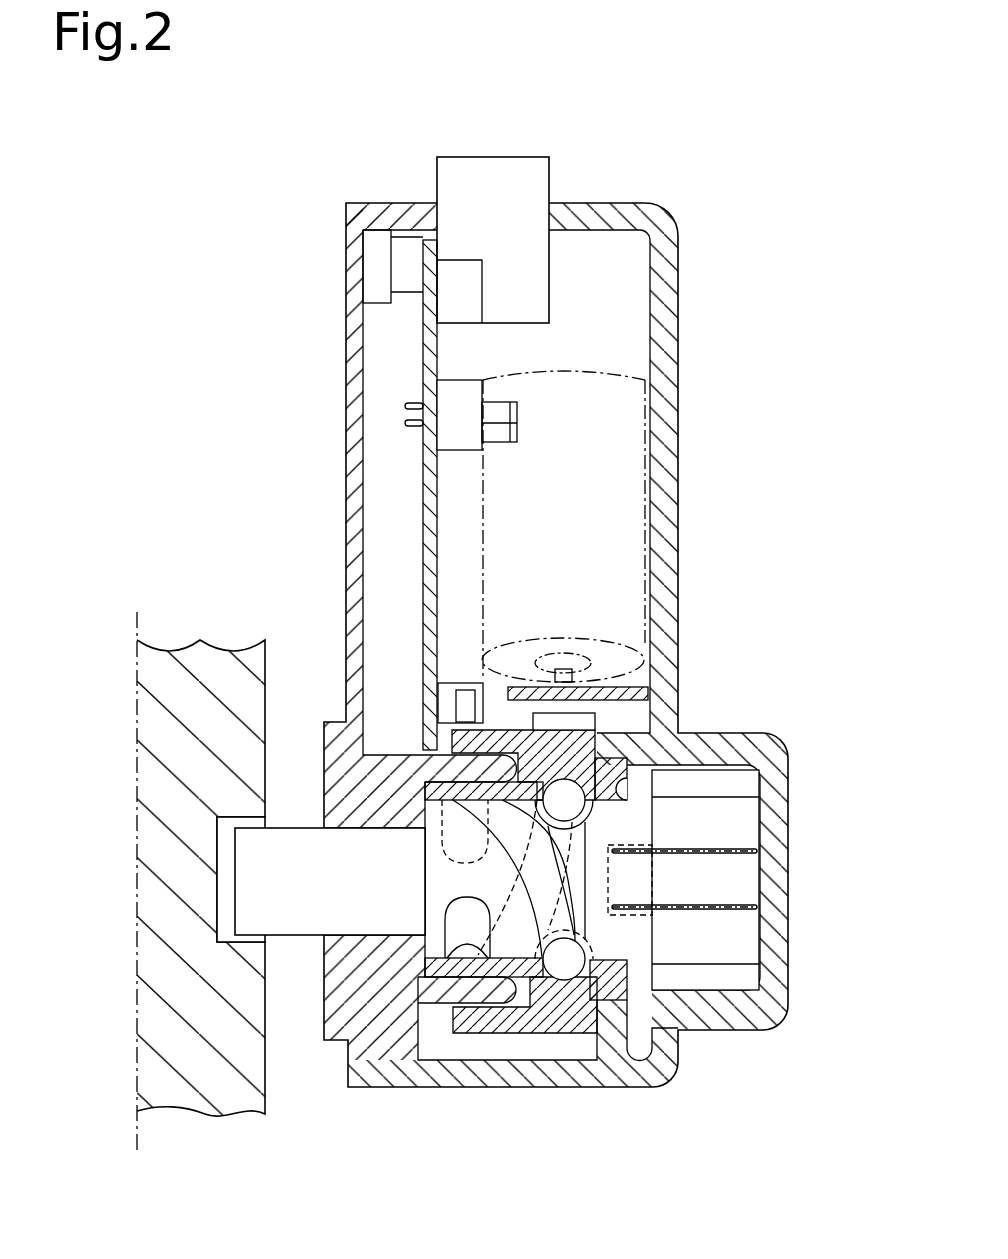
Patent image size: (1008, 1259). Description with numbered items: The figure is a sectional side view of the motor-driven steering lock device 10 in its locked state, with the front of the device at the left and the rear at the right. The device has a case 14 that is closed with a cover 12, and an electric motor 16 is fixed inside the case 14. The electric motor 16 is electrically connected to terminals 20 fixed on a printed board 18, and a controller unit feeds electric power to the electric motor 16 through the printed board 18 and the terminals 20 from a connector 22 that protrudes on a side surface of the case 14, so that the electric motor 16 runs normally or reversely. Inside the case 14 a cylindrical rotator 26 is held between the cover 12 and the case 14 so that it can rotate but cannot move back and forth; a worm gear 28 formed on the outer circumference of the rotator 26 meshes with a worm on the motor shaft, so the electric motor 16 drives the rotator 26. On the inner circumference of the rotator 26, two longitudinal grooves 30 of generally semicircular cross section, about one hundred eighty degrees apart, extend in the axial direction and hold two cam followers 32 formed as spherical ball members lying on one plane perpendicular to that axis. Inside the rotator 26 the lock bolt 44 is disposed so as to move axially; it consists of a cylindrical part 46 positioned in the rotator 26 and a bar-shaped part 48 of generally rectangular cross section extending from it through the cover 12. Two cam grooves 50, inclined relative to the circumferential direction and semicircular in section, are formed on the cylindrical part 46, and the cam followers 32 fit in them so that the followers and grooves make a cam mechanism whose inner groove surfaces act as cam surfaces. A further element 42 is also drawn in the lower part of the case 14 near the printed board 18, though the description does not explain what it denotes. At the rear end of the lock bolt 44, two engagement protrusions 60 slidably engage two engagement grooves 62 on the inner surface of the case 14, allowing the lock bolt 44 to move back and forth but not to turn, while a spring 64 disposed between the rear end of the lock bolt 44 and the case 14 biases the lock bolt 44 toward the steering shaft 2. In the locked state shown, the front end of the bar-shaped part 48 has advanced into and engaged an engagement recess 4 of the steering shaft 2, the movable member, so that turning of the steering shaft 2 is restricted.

The steering shaft 2 is at (168, 972).
The engagement recess 4 is at (232, 938).
The motor-driven steering lock device 10 is at (692, 207).
The cover 12 is at (357, 512).
The case 14 is at (668, 348).
The electric motor 16 is at (561, 374).
The printed board 18 is at (437, 324).
The terminals 20 is at (452, 396).
The connector 22 is at (528, 178).
The rotator 26 is at (588, 736).
The worm gear 28 is at (573, 1040).
The longitudinal grooves 30 is at (615, 785).
The cam followers 32 is at (563, 965).
The drive pin 42 is at (458, 690).
The lock bolt 44 is at (262, 861).
The cylindrical part 46 is at (428, 940).
The bar-shaped part 48 is at (217, 895).
The cam grooves 50 is at (573, 858).
The engagement protrusions 60 is at (680, 1030).
The engagement grooves 62 is at (790, 995).
The spring 64 is at (712, 850).